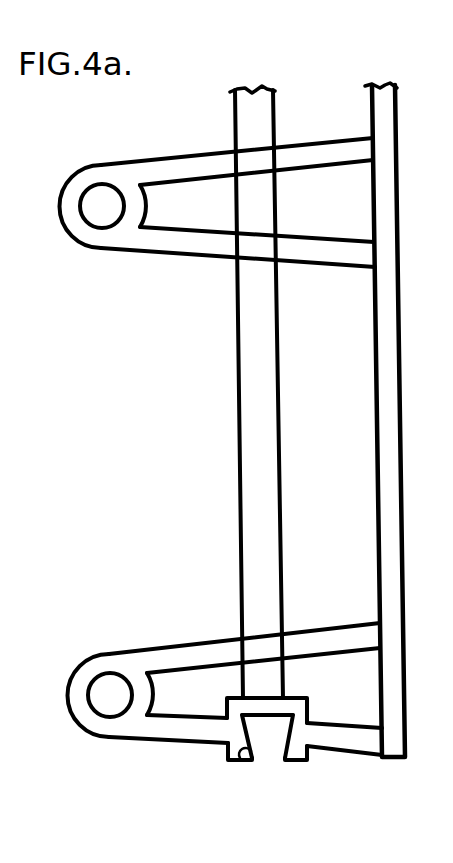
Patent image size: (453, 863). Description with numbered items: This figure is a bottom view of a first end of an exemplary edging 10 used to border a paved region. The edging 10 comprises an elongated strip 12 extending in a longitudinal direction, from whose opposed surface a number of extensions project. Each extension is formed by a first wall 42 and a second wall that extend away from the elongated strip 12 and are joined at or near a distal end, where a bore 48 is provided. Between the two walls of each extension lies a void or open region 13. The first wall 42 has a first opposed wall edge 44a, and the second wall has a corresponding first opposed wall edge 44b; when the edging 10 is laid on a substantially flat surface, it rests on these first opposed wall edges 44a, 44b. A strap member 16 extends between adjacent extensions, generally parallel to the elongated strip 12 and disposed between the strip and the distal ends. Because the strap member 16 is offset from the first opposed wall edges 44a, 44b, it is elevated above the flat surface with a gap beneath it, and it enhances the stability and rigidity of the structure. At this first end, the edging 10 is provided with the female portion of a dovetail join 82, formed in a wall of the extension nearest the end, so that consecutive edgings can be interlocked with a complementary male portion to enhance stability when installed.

The edging 10 is at (216, 69).
The elongated strip 12 is at (383, 100).
The void 13 is at (336, 218).
The strap member 16 is at (268, 108).
The first wall 42 is at (165, 734).
The first opposed wall edge 44a is at (330, 258).
The first opposed wall edge 44b is at (207, 165).
The bore 48 is at (103, 221).
The female portion of dovetail join 82 is at (245, 763).